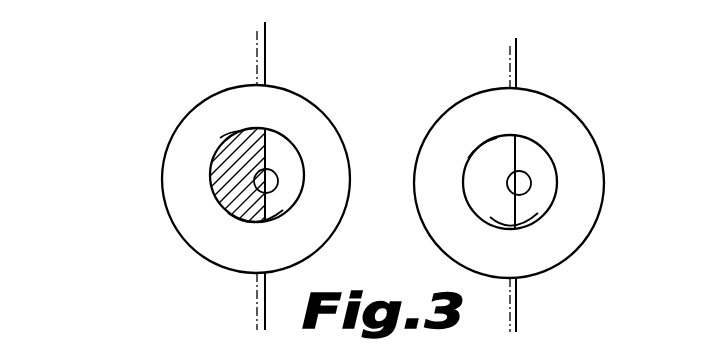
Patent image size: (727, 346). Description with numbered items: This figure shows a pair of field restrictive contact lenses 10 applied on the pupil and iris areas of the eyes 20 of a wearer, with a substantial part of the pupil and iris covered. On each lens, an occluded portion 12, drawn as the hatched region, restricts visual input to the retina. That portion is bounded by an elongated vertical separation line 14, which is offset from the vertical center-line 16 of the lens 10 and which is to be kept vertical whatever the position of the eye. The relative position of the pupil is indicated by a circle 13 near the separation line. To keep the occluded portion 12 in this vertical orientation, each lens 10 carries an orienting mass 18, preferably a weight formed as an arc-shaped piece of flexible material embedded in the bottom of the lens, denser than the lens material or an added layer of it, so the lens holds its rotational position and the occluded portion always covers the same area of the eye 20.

The field restrictive contact lens 10 is at (467, 152).
The occluded portion 12 is at (225, 153).
The circle indicating pupil position 13 is at (263, 183).
The vertical separation line 14 is at (265, 31).
The vertical center-line 16 is at (257, 31).
The orienting mass 18 is at (243, 220).
The eyes 20 is at (185, 113).